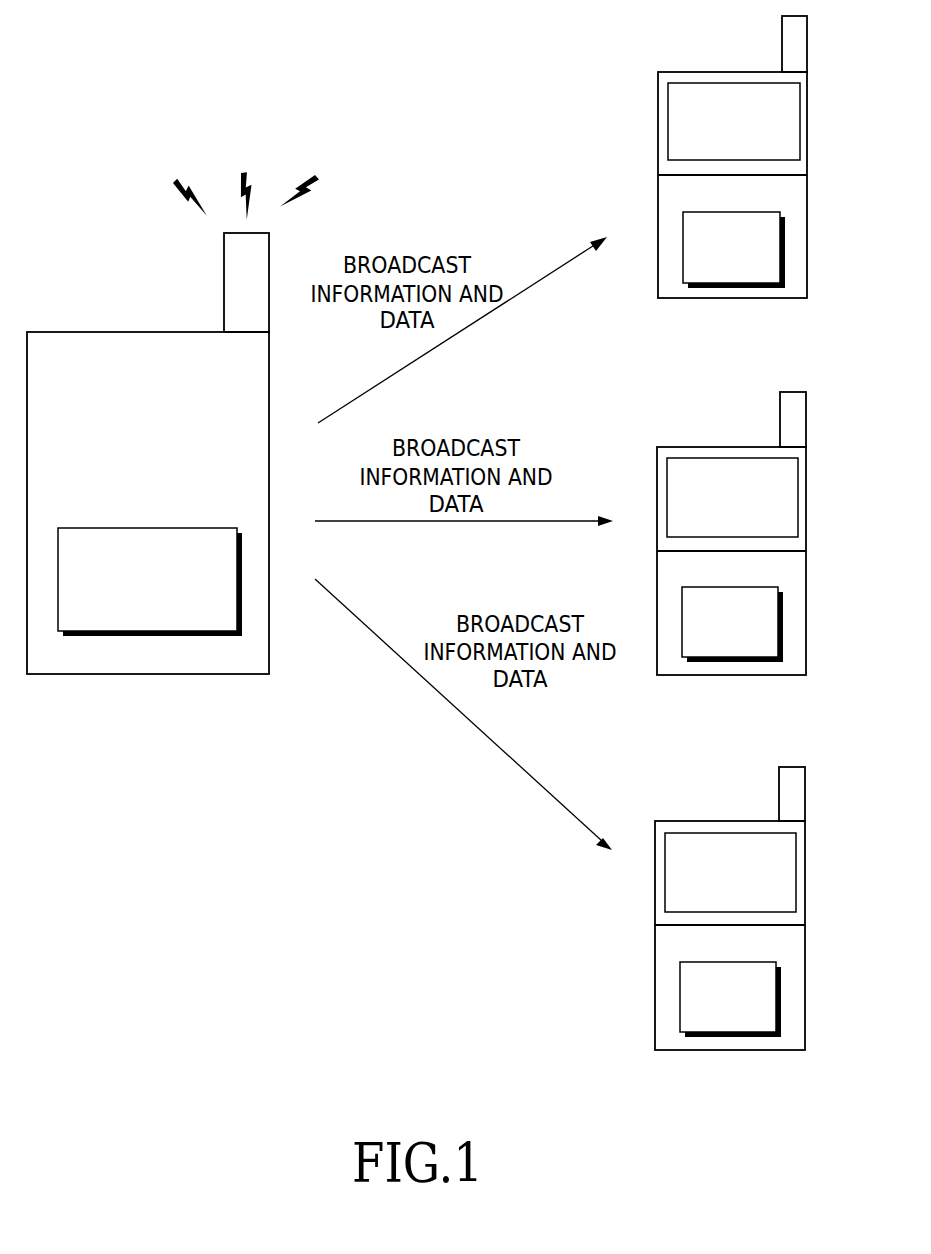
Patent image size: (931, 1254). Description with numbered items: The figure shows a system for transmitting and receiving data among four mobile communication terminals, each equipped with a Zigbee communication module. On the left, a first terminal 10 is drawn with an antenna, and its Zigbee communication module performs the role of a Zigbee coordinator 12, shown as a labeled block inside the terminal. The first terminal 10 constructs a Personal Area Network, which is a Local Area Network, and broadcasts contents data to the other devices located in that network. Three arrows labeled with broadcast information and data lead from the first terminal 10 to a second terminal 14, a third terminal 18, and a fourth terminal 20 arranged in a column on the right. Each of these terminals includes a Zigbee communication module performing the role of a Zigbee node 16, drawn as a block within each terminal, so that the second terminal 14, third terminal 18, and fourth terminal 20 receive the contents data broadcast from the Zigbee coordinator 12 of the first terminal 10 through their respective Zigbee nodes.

The first terminal 10 is at (133, 674).
The Zigbee coordinator 12 is at (145, 528).
The second terminal 14 is at (807, 119).
The Zigbee node 16 is at (727, 212).
The third terminal 18 is at (806, 495).
The fourth terminal 20 is at (805, 872).